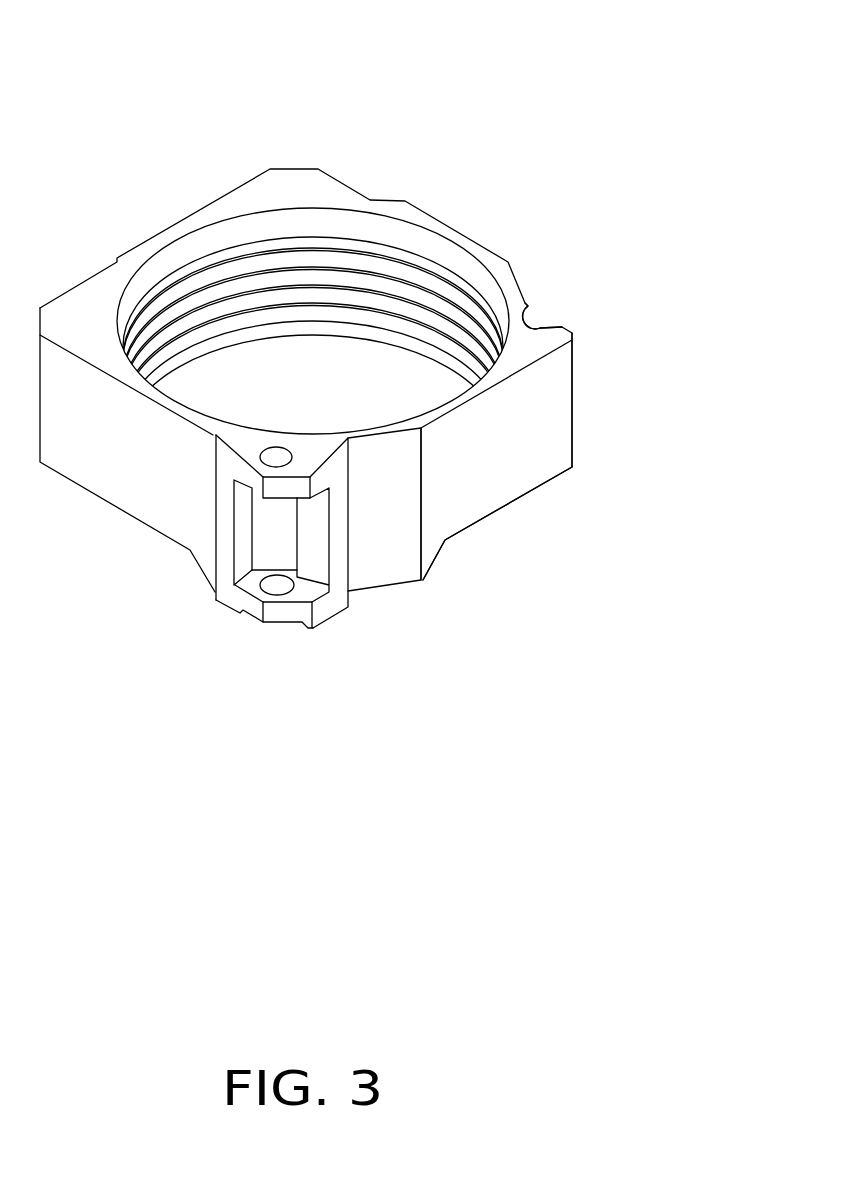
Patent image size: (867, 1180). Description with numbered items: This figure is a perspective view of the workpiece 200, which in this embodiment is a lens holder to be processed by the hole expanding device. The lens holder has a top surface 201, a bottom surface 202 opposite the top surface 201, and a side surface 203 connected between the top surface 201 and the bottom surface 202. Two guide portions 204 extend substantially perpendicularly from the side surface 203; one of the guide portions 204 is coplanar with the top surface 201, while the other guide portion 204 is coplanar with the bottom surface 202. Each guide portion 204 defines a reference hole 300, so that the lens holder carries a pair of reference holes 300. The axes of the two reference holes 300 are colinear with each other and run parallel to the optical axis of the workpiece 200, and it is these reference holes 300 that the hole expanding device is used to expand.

The workpiece 200 is at (323, 50).
The top surface 201 is at (530, 346).
The bottom surface 202 is at (467, 530).
The side surface 203 is at (545, 435).
The guide portion 204 is at (318, 457).
The reference hole 300 is at (277, 590).